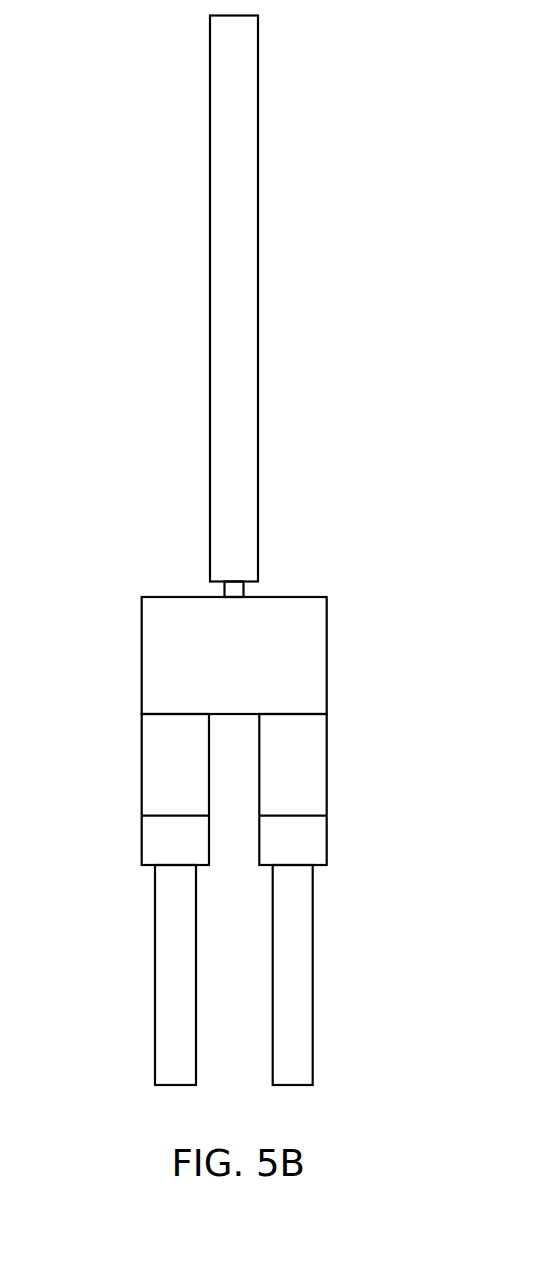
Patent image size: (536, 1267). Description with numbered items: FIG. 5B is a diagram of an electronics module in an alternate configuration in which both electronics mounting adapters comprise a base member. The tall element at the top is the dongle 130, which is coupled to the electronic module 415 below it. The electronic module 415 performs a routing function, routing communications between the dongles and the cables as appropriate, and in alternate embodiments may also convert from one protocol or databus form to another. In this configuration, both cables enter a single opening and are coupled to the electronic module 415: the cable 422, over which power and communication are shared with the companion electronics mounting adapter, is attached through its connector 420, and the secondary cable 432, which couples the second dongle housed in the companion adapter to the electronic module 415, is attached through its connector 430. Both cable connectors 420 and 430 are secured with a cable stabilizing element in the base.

The dongle 130 is at (210, 300).
The electronic module 415 is at (327, 655).
The connector 420 is at (327, 765).
The cable 422 is at (313, 975).
The connector 430 is at (142, 767).
The secondary cable 432 is at (155, 975).